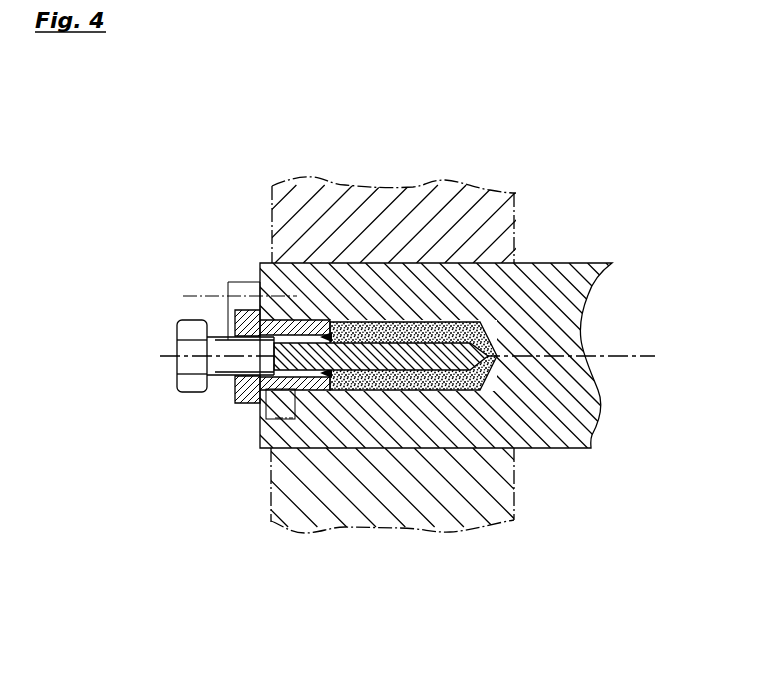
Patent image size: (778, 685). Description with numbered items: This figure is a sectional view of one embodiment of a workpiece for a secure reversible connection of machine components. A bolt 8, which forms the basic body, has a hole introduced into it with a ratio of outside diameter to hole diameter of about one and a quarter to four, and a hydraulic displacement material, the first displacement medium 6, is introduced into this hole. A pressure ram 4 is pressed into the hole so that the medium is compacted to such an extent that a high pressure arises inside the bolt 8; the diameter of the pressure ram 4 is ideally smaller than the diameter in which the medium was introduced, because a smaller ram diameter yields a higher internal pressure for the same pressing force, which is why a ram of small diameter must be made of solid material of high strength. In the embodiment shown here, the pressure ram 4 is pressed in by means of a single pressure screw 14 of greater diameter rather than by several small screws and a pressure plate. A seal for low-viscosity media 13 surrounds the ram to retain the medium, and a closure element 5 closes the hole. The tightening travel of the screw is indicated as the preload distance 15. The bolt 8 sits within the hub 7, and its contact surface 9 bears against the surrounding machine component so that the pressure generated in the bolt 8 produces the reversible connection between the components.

The pressure ram 4 is at (420, 326).
The closure element 5 is at (258, 282).
The first displacement medium 6 is at (330, 332).
The hub 7 is at (437, 208).
The bolt 8 is at (500, 295).
The contact surface 9 is at (494, 450).
The seal for low-viscosity media 13 is at (303, 325).
The pressure screw 14 is at (200, 347).
The preload distance 15 is at (263, 447).